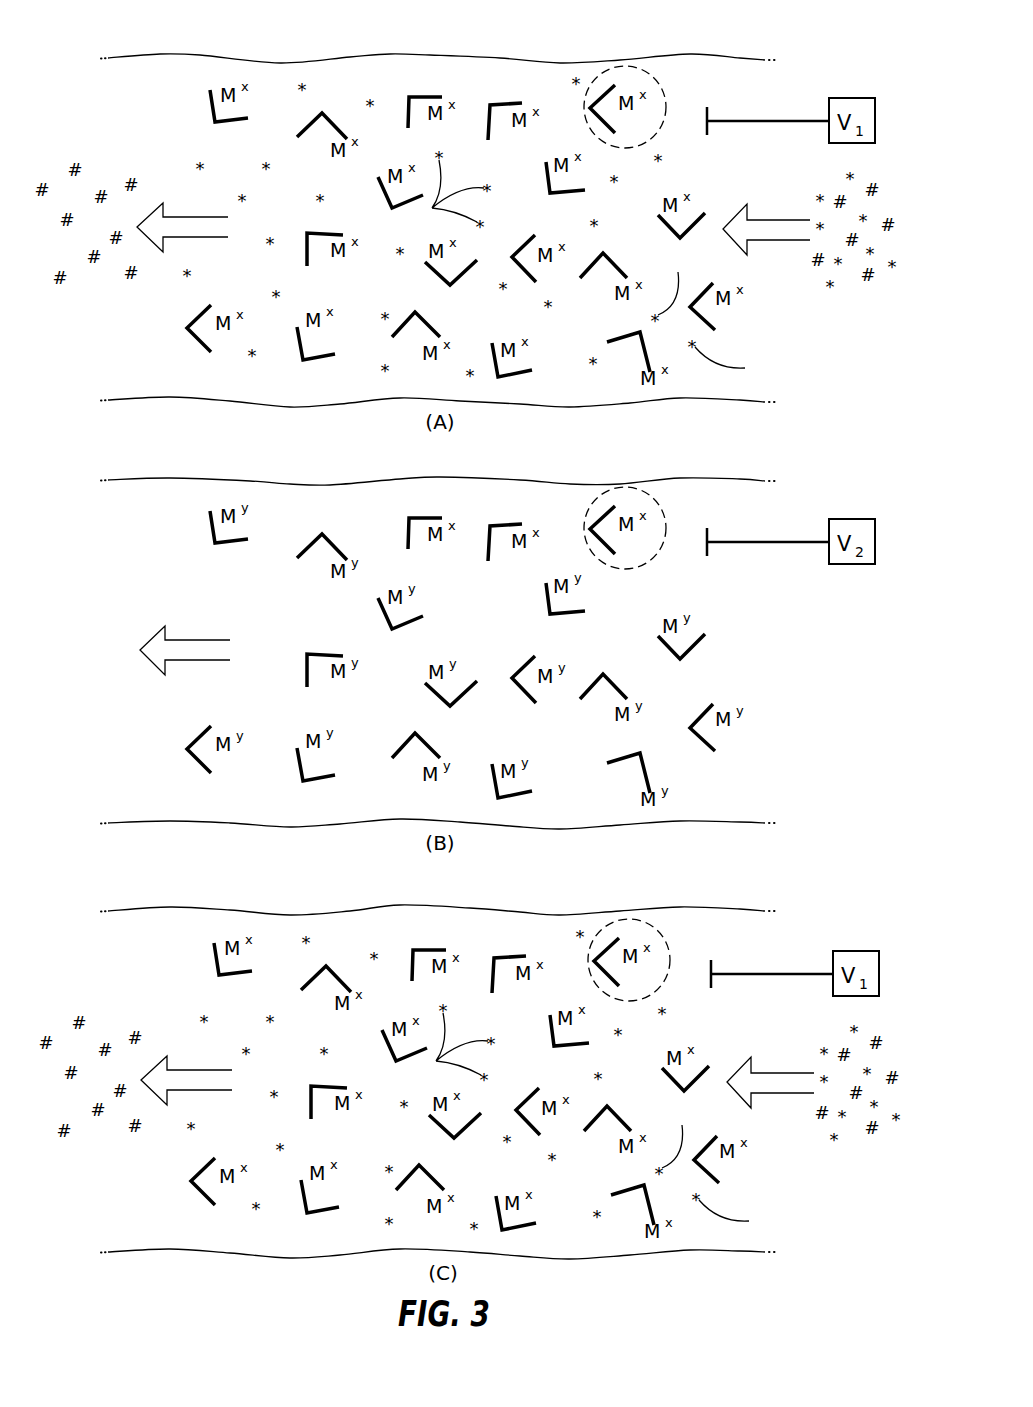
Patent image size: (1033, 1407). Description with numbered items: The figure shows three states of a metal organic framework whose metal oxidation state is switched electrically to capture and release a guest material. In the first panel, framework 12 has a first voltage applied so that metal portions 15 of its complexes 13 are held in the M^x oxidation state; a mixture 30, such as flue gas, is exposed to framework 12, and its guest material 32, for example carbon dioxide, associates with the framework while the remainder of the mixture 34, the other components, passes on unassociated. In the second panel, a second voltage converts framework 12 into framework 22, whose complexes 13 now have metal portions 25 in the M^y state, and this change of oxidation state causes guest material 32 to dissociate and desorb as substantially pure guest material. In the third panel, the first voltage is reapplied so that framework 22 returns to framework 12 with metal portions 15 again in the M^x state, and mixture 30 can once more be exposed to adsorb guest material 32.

The framework 12 is at (182, 95).
The complexes 13 is at (665, 92).
The metal portions 15 is at (502, 104).
The framework 22 is at (305, 522).
The metal portions 25 is at (503, 525).
The mixture 30 is at (888, 272).
The guest material 32 is at (141, 603).
The remainder of the mixture 34 is at (130, 178).